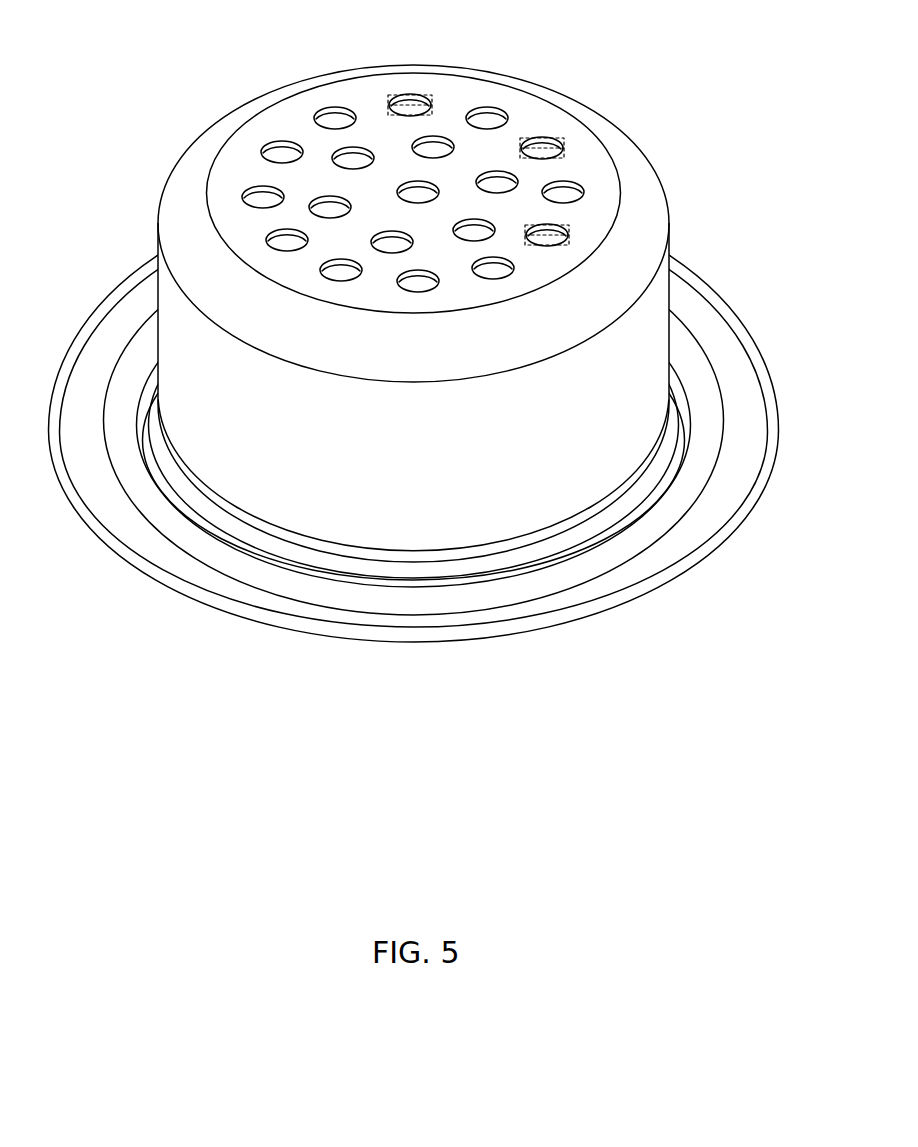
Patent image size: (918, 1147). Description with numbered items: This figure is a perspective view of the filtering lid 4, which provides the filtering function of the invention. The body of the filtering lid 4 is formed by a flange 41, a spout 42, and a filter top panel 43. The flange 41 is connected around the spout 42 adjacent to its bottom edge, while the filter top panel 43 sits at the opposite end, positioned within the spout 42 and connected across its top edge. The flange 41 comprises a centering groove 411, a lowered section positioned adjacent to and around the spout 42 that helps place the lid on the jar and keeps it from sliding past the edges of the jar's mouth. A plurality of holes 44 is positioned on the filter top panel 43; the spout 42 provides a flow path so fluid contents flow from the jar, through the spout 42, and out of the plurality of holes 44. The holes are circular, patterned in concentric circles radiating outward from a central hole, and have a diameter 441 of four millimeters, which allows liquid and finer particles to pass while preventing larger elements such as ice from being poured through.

The filtering lid 4 is at (437, 359).
The flange 41 is at (293, 608).
The centering groove 411 is at (678, 465).
The spout 42 is at (173, 350).
The filter top panel 43 is at (283, 118).
The plurality of holes 44 is at (488, 107).
The diameter 441 is at (405, 104).